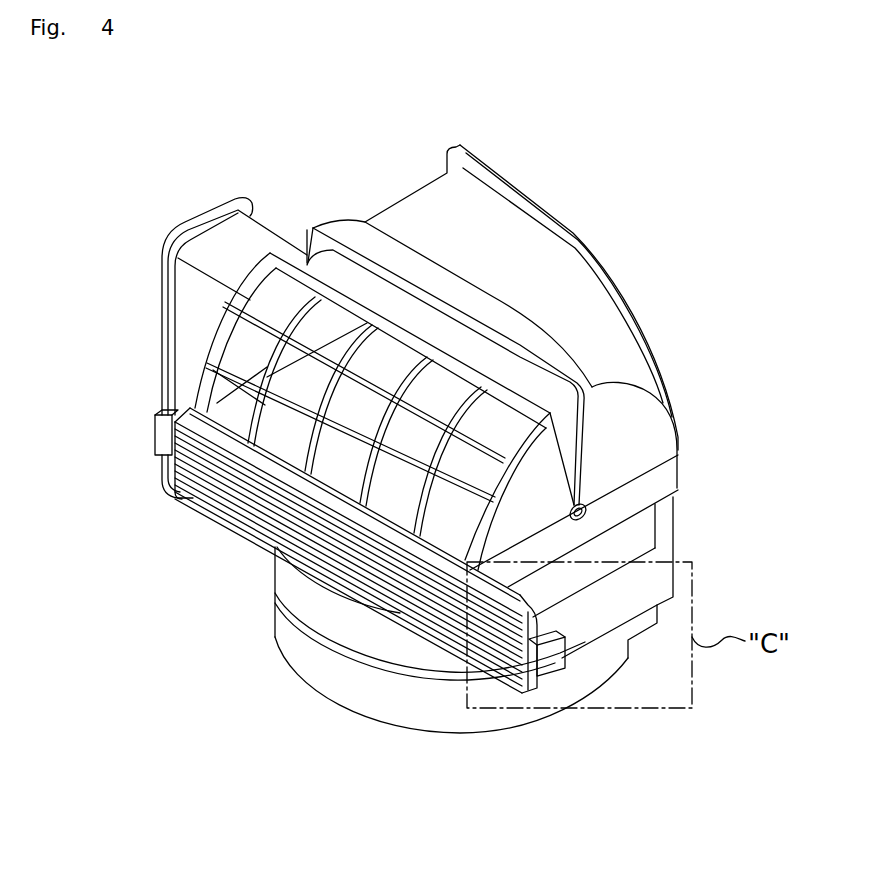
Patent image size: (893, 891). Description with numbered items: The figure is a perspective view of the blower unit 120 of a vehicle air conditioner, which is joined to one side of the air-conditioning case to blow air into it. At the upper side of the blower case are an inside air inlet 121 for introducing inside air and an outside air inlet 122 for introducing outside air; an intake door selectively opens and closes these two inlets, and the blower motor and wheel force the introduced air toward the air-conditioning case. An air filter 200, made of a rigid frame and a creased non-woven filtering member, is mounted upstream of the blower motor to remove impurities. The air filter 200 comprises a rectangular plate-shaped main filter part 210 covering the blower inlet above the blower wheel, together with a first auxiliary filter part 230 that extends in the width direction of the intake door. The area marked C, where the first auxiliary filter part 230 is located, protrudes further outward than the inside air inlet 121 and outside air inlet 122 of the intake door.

The blower unit 120 is at (360, 717).
The inside air inlet 121 is at (250, 342).
The outside air inlet 122 is at (578, 232).
The air filter 200 is at (265, 527).
The main filter part 210 is at (187, 500).
The first auxiliary filter part 230 is at (497, 655).